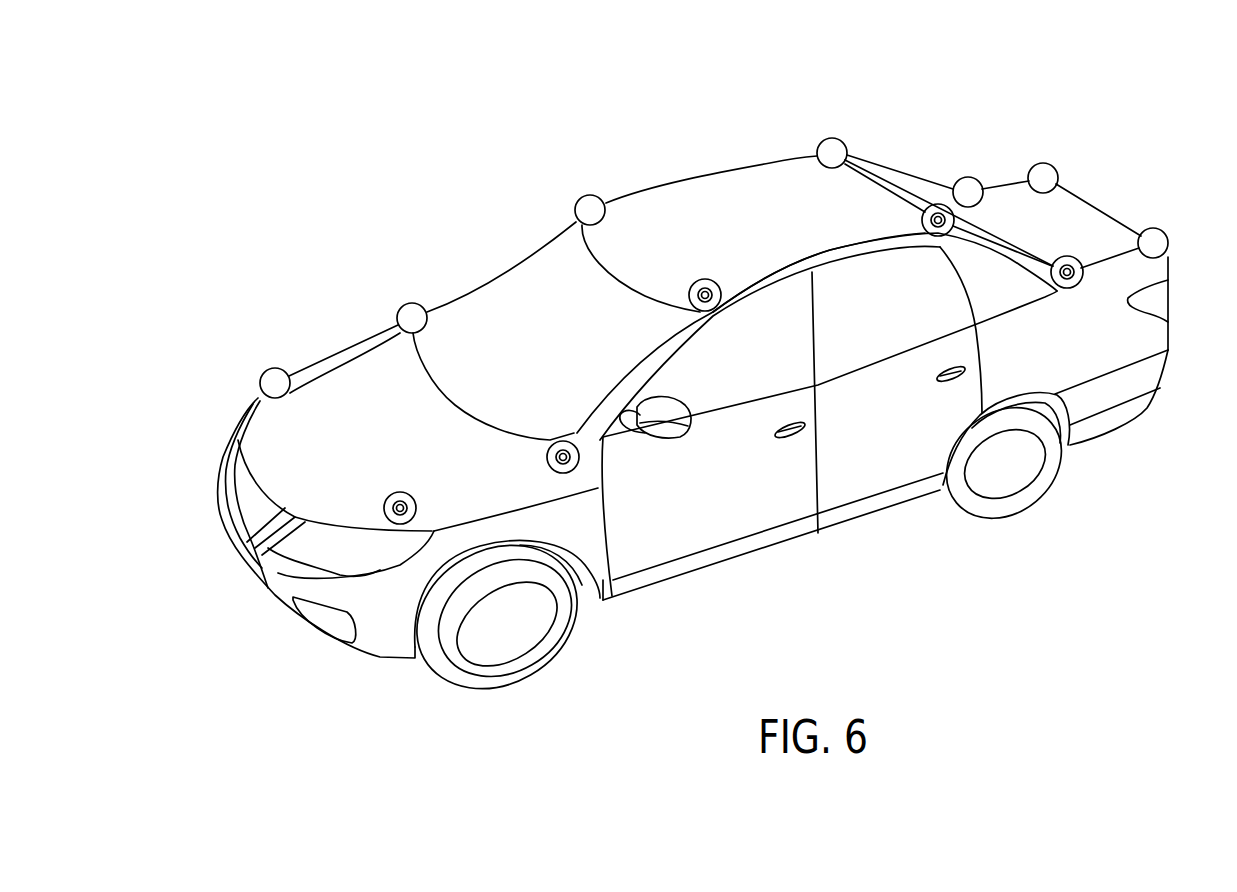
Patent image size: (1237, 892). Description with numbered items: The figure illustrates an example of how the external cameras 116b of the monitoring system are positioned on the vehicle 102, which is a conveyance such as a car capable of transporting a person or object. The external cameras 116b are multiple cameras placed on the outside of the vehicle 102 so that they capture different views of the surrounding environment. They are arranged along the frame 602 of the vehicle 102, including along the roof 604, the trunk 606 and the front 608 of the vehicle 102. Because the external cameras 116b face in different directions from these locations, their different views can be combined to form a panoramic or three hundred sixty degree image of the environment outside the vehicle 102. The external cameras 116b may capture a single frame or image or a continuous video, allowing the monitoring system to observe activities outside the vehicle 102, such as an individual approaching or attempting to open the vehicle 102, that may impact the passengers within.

The vehicle 102 is at (833, 532).
The external cameras 116b is at (225, 390).
The frame 602 is at (752, 282).
The roof 604 is at (660, 195).
The trunk 606 is at (1015, 192).
The front 608 is at (455, 460).